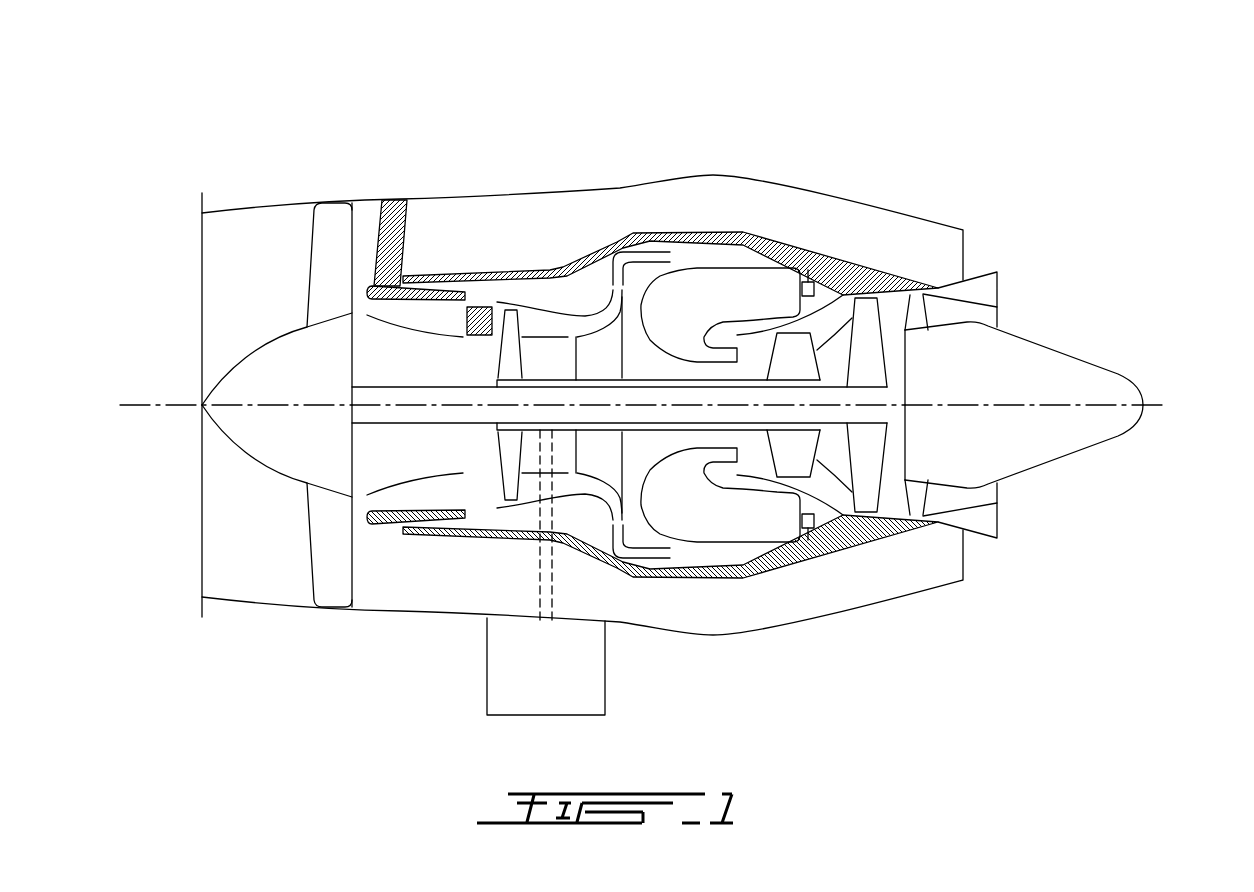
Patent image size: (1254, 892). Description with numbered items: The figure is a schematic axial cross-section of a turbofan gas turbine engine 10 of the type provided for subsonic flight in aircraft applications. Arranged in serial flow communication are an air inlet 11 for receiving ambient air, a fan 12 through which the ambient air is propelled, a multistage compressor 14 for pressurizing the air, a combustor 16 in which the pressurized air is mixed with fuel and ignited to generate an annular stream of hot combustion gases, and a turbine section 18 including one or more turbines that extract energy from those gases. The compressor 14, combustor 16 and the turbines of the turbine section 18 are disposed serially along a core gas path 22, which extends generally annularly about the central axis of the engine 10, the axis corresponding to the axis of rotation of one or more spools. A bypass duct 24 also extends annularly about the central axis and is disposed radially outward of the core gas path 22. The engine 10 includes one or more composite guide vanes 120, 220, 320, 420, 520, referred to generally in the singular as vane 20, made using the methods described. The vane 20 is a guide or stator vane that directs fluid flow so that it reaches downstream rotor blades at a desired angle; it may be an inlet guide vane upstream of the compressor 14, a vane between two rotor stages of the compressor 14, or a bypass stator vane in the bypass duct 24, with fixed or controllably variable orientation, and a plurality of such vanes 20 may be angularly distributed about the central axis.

The gas turbine engine 10 is at (638, 378).
The air inlet 11 is at (202, 233).
The fan 12 is at (328, 537).
The multistage compressor 14 is at (558, 330).
The combustor 16 is at (720, 300).
The turbine section 18 is at (832, 460).
The vane 20 is at (450, 193).
The composite guide vane 120 is at (450, 193).
The composite guide vane 220 is at (450, 193).
The composite guide vane 320 is at (450, 193).
The composite guide vane 420 is at (450, 193).
The composite guide vane 520 is at (482, 307).
The core gas path 22 is at (418, 315).
The bypass duct 24 is at (627, 210).